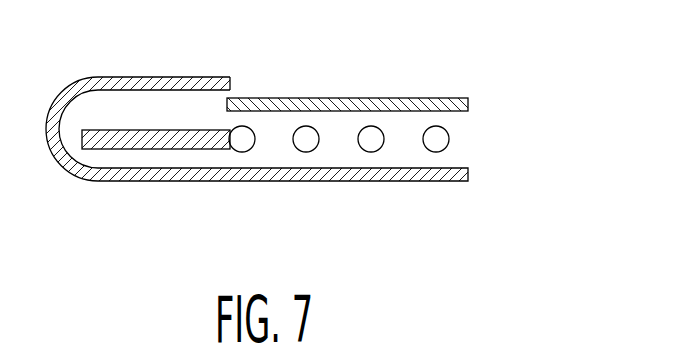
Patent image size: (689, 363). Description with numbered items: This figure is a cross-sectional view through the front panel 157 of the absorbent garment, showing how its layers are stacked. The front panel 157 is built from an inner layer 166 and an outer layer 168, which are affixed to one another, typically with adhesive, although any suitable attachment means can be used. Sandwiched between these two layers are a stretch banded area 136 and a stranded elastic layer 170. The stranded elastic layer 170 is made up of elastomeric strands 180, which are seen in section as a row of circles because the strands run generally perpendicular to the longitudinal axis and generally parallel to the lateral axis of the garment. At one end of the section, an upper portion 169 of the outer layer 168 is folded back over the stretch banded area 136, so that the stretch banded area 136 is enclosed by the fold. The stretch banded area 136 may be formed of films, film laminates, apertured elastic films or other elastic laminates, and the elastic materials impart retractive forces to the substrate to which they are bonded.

The upper portion of the outer layer 169 is at (110, 77).
The stretch banded area 136 is at (153, 137).
The front panel 157 is at (351, 71).
The inner layer 166 is at (468, 104).
The outer layer 168 is at (468, 175).
The stranded elastic layer 170 is at (474, 134).
The elastomeric strands 180 is at (436, 152).